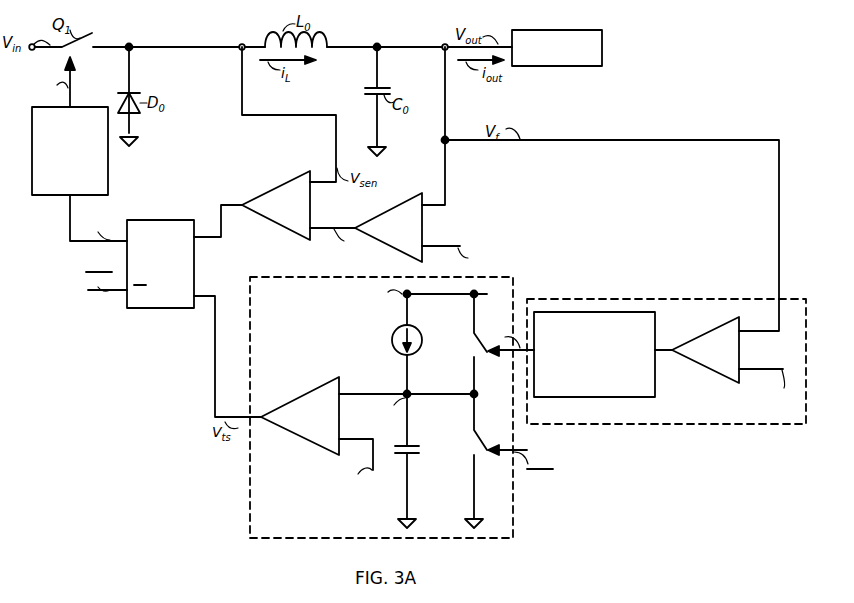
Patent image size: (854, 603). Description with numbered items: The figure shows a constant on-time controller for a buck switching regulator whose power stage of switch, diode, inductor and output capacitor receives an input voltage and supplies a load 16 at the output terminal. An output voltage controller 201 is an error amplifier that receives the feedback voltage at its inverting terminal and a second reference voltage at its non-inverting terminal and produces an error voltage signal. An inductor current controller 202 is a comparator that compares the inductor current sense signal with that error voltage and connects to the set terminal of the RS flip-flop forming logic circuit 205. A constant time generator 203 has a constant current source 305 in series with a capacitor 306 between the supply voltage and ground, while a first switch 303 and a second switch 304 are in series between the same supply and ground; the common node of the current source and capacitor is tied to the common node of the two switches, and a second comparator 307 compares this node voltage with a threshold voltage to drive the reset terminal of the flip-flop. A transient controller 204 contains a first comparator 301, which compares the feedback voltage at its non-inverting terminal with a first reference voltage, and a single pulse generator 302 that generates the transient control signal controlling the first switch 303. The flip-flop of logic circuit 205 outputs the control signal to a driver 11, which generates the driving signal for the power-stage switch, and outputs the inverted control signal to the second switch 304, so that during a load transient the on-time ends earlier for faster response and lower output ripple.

The driver 11 is at (79, 174).
The load 16 is at (557, 48).
The output voltage controller 201 is at (427, 232).
The inductor current controller 202 is at (300, 214).
The constant time generator 203 is at (401, 407).
The transient controller 204 is at (666, 361).
The logic circuit 205 is at (194, 311).
The first comparator 301 is at (734, 359).
The single pulse generator 302 is at (603, 354).
The first switch 303 is at (474, 336).
The second switch 304 is at (474, 438).
The constant current source 305 is at (395, 335).
The capacitor 306 is at (408, 456).
The second comparator 307 is at (317, 434).